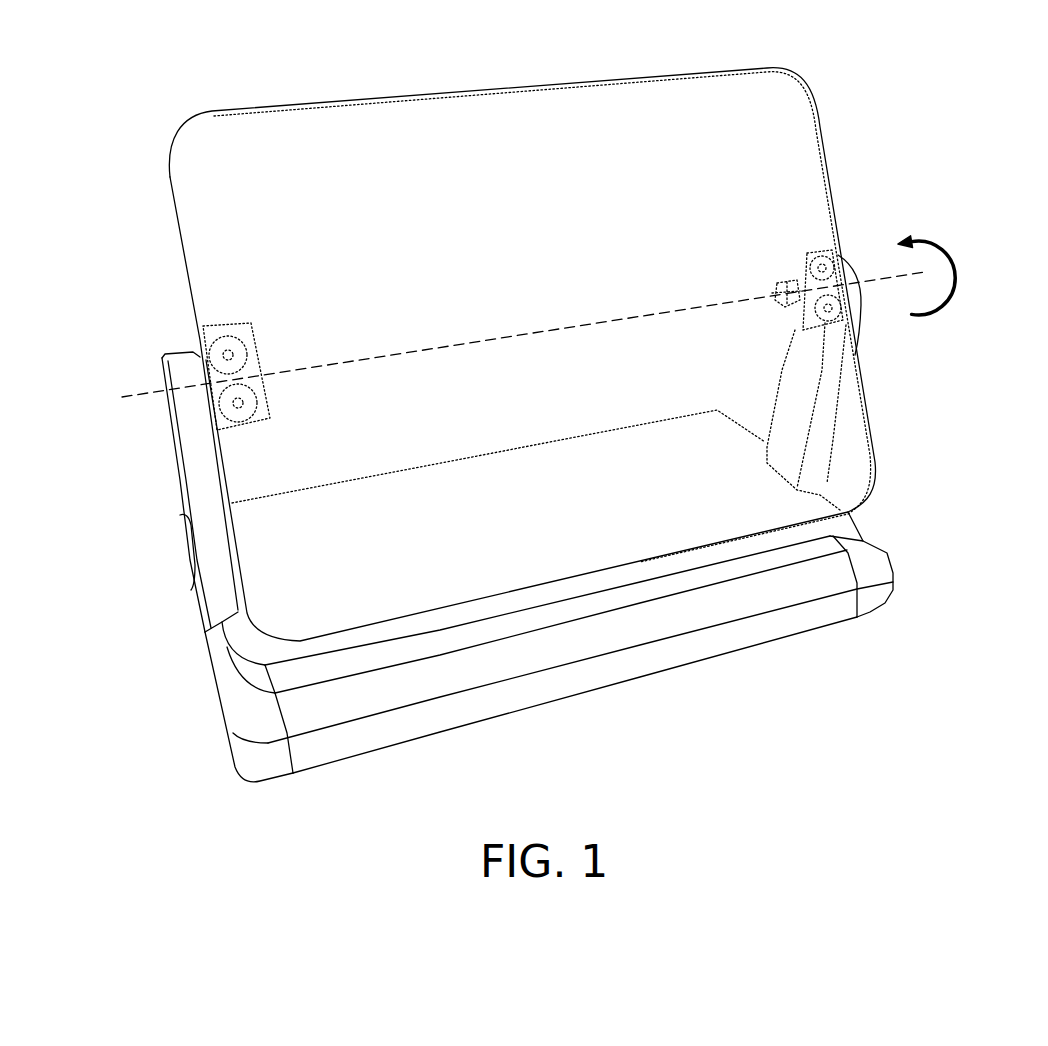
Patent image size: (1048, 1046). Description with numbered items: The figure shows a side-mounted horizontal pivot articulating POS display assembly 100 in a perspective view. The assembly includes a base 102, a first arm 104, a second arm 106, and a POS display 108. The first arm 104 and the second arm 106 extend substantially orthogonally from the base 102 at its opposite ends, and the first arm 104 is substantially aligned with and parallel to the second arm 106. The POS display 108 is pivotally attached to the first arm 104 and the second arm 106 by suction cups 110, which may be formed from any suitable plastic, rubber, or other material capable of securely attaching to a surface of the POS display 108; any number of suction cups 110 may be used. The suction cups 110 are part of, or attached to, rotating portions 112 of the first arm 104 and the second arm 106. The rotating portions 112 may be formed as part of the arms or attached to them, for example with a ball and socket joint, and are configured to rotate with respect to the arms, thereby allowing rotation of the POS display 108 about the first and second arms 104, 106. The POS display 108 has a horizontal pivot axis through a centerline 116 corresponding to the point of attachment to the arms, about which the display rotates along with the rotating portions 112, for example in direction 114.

The articulating POS display assembly 100 is at (878, 89).
The base 102 is at (893, 597).
The first arm 104 is at (176, 464).
The second arm 106 is at (860, 302).
The POS display 108 is at (783, 180).
The suction cups 110 is at (242, 355).
The rotating portions 112 is at (180, 332).
The direction 114 is at (955, 257).
The centerline 116 is at (135, 392).